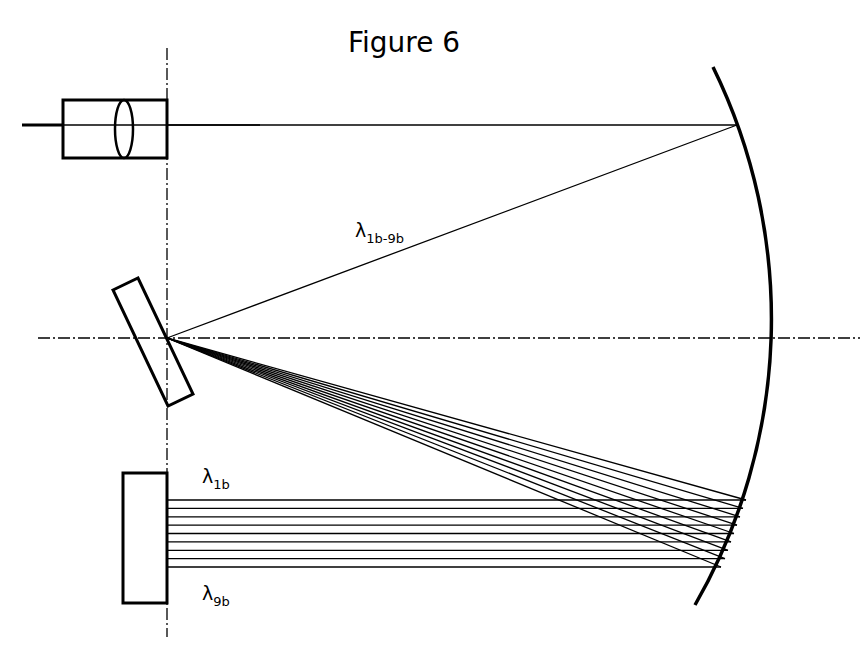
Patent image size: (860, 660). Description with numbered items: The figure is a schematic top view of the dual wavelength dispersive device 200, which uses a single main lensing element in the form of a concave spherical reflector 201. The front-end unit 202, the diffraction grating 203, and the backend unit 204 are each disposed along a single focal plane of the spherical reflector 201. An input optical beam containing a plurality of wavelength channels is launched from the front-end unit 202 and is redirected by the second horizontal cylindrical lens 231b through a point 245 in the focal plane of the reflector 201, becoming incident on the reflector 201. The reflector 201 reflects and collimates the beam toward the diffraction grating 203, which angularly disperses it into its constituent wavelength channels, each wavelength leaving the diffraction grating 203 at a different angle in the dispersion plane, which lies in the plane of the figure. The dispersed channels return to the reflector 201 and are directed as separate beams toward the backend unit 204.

The dual wavelength dispersive device 200 is at (543, 82).
The spherical reflector 201 is at (760, 187).
The front-end unit 202 is at (85, 85).
The diffraction grating 203 is at (132, 302).
The backend unit 204 is at (107, 508).
The point in the focal plane of the reflector 245 is at (167, 123).
The second horizontal cylindrical lens 231b is at (123, 143).